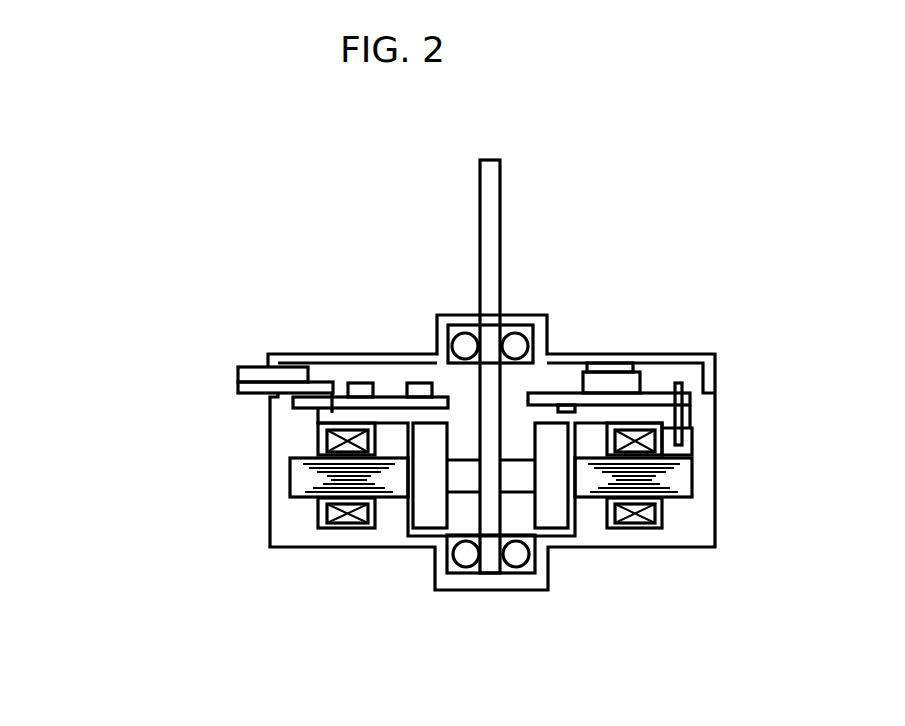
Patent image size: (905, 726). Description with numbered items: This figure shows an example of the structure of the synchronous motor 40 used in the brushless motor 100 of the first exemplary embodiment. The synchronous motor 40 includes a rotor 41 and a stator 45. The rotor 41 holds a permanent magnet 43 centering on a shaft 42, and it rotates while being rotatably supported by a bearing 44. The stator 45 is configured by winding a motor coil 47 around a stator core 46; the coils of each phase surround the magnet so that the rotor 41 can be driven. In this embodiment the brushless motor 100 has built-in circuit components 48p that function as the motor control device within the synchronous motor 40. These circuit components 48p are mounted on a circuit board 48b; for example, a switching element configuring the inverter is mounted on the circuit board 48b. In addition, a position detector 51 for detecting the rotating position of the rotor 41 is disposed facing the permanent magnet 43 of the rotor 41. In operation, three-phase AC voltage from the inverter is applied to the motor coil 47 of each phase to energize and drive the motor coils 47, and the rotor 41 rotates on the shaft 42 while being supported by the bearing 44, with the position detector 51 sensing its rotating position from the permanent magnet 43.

The brushless motor 100 is at (415, 335).
The synchronous motor 40 is at (268, 352).
The rotor 41 is at (195, 688).
The shaft 42 is at (488, 503).
The permanent magnet 43 is at (432, 515).
The bearing 44 is at (513, 325).
The stator 45 is at (108, 392).
The stator core 46 is at (303, 478).
The motor coil 47 is at (327, 440).
The circuit board 48b is at (643, 395).
The circuit components 48p is at (410, 380).
The position detector 51 is at (568, 403).